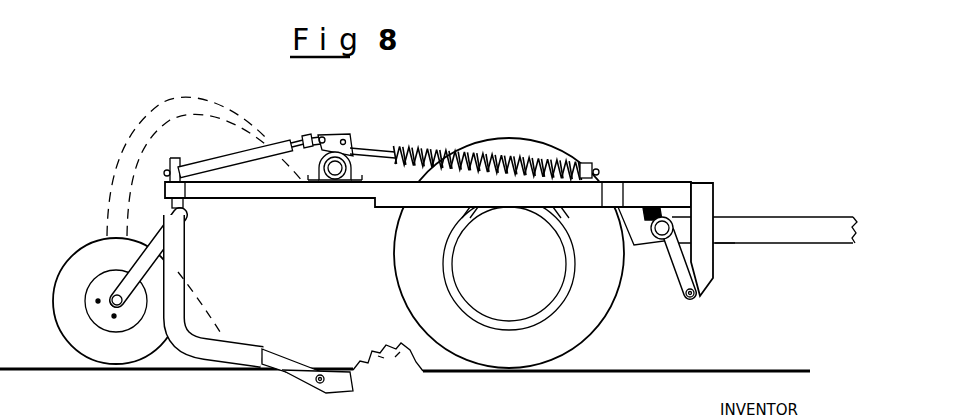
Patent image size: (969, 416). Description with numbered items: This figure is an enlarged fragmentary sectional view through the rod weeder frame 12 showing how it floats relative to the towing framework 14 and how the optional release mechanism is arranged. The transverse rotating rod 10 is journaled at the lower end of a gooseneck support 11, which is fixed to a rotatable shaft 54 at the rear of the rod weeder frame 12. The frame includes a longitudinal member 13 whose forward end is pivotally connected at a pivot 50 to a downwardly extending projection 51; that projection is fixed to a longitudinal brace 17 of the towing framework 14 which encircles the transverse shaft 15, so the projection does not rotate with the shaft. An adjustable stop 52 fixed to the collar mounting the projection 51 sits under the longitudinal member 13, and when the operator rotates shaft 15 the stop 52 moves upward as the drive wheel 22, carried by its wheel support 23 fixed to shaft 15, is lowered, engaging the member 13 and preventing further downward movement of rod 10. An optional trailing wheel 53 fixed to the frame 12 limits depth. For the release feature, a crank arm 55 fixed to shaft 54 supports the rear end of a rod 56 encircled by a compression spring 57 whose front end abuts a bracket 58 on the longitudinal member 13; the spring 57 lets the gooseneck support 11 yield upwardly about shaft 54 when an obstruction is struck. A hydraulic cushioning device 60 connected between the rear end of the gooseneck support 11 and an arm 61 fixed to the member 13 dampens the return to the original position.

The transverse rotating rod 10 is at (324, 370).
The gooseneck support 11 is at (173, 267).
The rod weeder frame 12 is at (416, 208).
The longitudinal member 13 is at (670, 190).
The towing framework 14 is at (764, 212).
The transverse shaft 15 is at (660, 240).
The longitudinal brace 17 is at (723, 239).
The drive wheel 22 is at (588, 320).
The wheel support 23 is at (630, 233).
The pivotal connection 50 is at (693, 297).
The downwardly extending projection 51 is at (674, 283).
The adjustable stop 52 is at (656, 208).
The trailing wheel 53 is at (77, 265).
The rotatable shaft 54 is at (327, 183).
The crank arm 55 is at (330, 136).
The rod 56 is at (381, 150).
The compression spring 57 is at (436, 152).
The bracket 58 is at (588, 163).
The hydraulic cushioning device 60 is at (267, 143).
The arm 61 is at (313, 137).